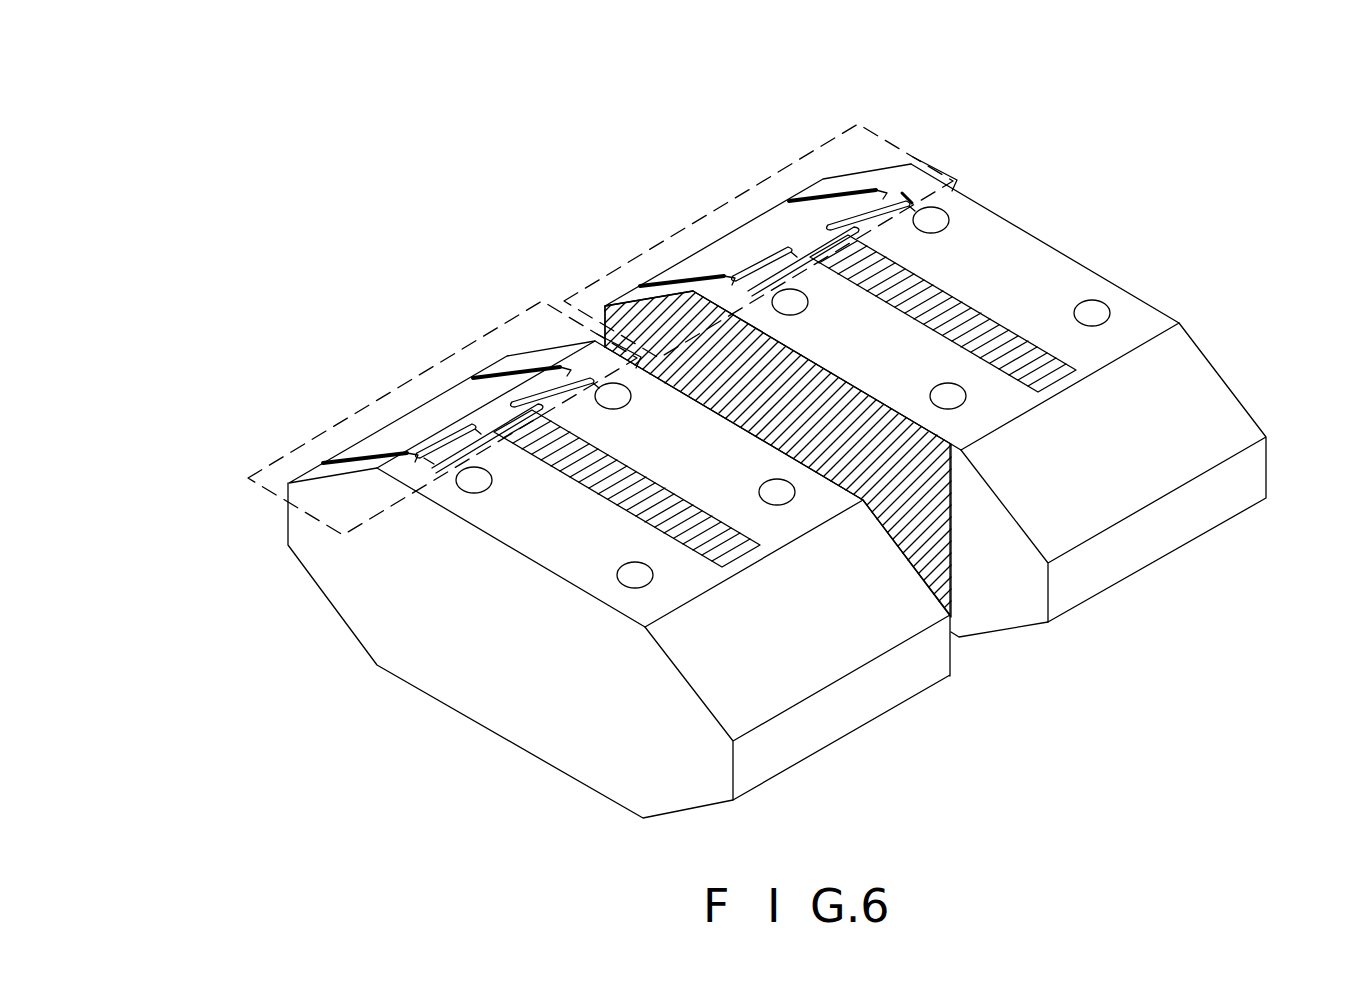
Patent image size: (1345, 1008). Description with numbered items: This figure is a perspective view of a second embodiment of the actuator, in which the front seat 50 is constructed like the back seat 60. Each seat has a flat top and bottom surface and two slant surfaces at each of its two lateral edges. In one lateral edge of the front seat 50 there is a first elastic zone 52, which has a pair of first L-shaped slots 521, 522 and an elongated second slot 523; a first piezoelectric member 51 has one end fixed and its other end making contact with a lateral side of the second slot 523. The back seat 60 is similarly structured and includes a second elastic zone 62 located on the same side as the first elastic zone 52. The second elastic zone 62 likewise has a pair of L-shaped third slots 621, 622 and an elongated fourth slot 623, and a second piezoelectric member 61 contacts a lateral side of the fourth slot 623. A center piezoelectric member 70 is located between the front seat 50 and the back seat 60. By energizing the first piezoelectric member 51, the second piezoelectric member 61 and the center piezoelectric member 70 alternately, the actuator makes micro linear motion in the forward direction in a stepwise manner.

The front seat 50 is at (767, 713).
The first piezoelectric member 51 is at (573, 470).
The first elastic zone 52 is at (533, 330).
The first L-shaped slot 521 is at (477, 377).
The first L-shaped slot 522 is at (322, 463).
The second slot 523 is at (428, 463).
The back seat 60 is at (1183, 363).
The second piezoelectric member 61 is at (947, 268).
The second elastic zone 62 is at (846, 130).
The third L-shaped slot 621 is at (790, 200).
The third L-shaped slot 622 is at (640, 292).
The fourth slot 623 is at (903, 203).
The center piezoelectric member 70 is at (953, 600).